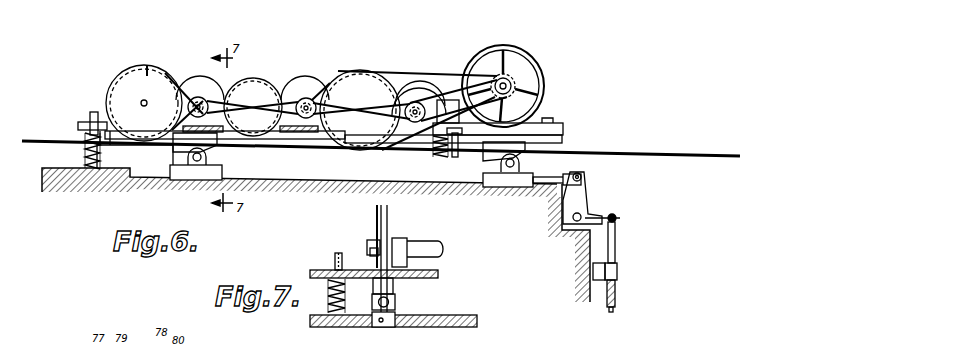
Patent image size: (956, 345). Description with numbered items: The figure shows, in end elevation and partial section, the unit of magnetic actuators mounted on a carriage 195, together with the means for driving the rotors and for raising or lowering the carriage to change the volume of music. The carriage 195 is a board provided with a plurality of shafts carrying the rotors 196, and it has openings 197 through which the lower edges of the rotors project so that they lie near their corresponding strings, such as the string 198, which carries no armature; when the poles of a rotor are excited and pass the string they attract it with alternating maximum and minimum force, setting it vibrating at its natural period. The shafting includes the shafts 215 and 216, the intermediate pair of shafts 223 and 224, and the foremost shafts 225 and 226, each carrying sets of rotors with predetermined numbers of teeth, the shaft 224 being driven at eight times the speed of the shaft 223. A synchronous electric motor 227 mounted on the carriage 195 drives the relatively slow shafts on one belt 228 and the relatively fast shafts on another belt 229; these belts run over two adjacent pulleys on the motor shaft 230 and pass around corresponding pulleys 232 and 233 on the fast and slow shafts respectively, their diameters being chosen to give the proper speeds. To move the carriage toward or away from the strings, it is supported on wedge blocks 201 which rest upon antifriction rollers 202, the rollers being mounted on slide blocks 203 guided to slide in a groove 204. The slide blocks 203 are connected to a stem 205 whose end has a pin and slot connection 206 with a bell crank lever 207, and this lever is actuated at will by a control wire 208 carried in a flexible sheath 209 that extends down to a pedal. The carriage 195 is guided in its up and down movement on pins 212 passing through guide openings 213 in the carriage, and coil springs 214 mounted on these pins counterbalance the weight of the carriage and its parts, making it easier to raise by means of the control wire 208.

In FIG. 6, the carriage 195 is at (108, 129).
In FIG. 7, the carriage 195 is at (440, 273).
In FIG. 6, the rotors 196 is at (204, 76).
In FIG. 6, the openings 197 is at (110, 140).
In FIG. 6, the string 198 is at (675, 154).
In FIG. 6, the wedge blocks 201 is at (213, 146).
In FIG. 7, the wedge blocks 201 is at (394, 285).
In FIG. 6, the rollers 202 is at (189, 157).
In FIG. 7, the rollers 202 is at (396, 300).
In FIG. 6, the slide blocks 203 is at (200, 181).
In FIG. 7, the slide blocks 203 is at (374, 323).
In FIG. 6, the groove 204 is at (150, 180).
In FIG. 7, the groove 204 is at (393, 323).
In FIG. 6, the stem 205 is at (553, 181).
In FIG. 6, the pin and slot connection 206 is at (583, 178).
In FIG. 6, the bell crank lever 207 is at (586, 205).
In FIG. 6, the control wire 208 is at (616, 252).
In FIG. 6, the flexible sheath 209 is at (616, 295).
In FIG. 6, the pins 212 is at (91, 114).
In FIG. 7, the pins 212 is at (334, 258).
In FIG. 6, the guide openings 213 is at (78, 125).
In FIG. 6, the coil springs 214 is at (86, 147).
In FIG. 7, the coil springs 214 is at (340, 294).
In FIG. 6, the shaft 215 is at (373, 90).
In FIG. 6, the shaft 216 is at (424, 93).
In FIG. 6, the shaft 223 is at (264, 94).
In FIG. 6, the shaft 224 is at (307, 99).
In FIG. 6, the shaft 225 is at (160, 93).
In FIG. 6, the shaft 226 is at (199, 98).
In FIG. 7, the shaft 226 is at (445, 236).
In FIG. 6, the electric motor 227 is at (533, 56).
In FIG. 6, the belt 228 is at (394, 68).
In FIG. 7, the belt 228 is at (377, 218).
In FIG. 6, the belt 229 is at (447, 82).
In FIG. 7, the belt 229 is at (369, 250).
In FIG. 6, the motor shaft 230 is at (510, 82).
In FIG. 6, the pulleys 232 is at (145, 67).
In FIG. 7, the pulleys 232 is at (386, 222).
In FIG. 6, the pulleys 233 is at (216, 88).
In FIG. 7, the pulleys 233 is at (366, 243).